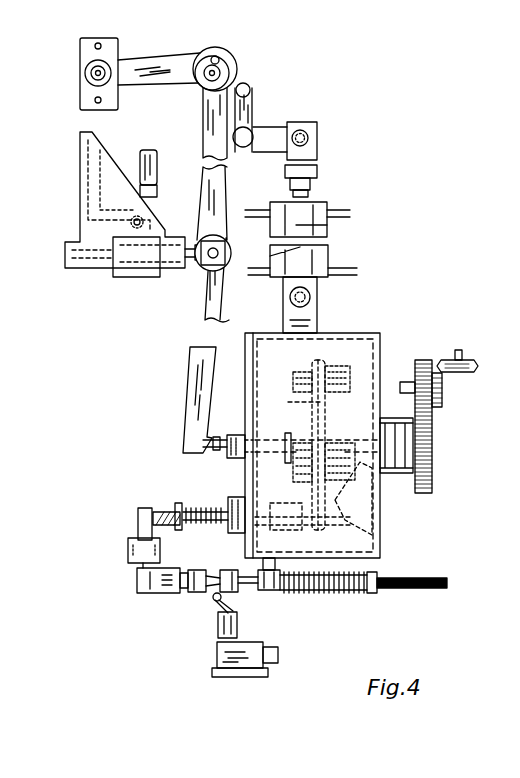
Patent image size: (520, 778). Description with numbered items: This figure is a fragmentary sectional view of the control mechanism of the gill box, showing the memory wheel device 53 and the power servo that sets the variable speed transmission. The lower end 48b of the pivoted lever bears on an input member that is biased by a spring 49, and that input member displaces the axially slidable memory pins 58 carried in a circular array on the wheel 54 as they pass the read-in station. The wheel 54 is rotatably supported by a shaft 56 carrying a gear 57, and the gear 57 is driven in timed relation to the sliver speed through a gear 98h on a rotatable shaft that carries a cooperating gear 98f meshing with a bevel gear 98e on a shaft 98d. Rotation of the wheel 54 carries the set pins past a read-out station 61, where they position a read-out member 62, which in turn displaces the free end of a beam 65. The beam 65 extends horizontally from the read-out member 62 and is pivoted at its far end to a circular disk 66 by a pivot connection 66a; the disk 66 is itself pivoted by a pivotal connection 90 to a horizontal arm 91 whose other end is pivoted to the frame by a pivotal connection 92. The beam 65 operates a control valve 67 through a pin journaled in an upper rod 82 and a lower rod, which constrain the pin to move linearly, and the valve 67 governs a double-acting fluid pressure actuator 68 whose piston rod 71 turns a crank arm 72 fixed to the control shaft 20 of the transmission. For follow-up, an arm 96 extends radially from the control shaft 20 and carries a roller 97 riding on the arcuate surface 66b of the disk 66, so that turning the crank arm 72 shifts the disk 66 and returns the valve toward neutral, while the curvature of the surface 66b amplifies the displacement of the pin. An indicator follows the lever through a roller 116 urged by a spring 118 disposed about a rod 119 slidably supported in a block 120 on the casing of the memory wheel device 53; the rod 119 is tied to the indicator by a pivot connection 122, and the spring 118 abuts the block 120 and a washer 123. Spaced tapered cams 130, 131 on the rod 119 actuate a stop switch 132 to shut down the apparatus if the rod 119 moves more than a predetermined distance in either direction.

The pivotal connection 92 is at (92, 75).
The horizontal arm 91 is at (168, 60).
The pivotal connection 90 is at (218, 56).
The arcuate surface 66b is at (230, 58).
The circular disk 66 is at (225, 68).
The pivot connection 66a is at (208, 78).
The roller 97 is at (248, 86).
The arm 96 is at (250, 105).
The control shaft 20 is at (250, 130).
The crank arm 72 is at (275, 150).
The piston rod 71 is at (312, 200).
The fluid pressure actuator 68 is at (332, 268).
The control valve 67 is at (145, 282).
The upper rod 82 is at (200, 265).
The beam 65 is at (195, 378).
The read-out member 62 is at (218, 450).
The read-out station 61 is at (258, 466).
The memory wheel device 53 is at (258, 410).
The memory pins 58 is at (296, 374).
The wheel 54 is at (300, 404).
The shaft 56 is at (360, 438).
The gear 57 is at (428, 490).
The gear 98h is at (424, 360).
The shaft 98d is at (458, 350).
The bevel gear 98e is at (496, 352).
The cooperating gear 98f is at (442, 398).
The lower end of pivoted lever 48b is at (177, 510).
The roller 116 is at (138, 524).
The spring 49 is at (215, 525).
The cam 131 is at (228, 572).
The pivot connection 122 is at (147, 594).
The cam 130 is at (210, 593).
The block 120 is at (270, 590).
The spring 118 is at (328, 592).
The washer 123 is at (375, 574).
The rod 119 is at (416, 578).
The stop switch 132 is at (216, 658).